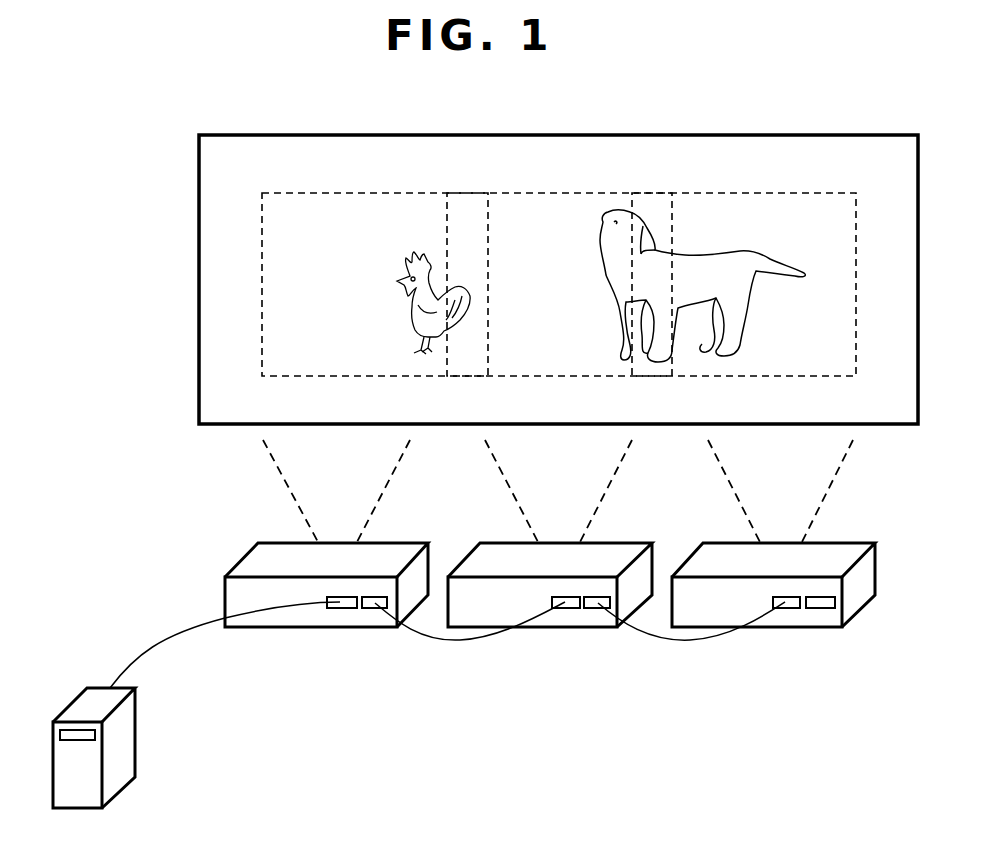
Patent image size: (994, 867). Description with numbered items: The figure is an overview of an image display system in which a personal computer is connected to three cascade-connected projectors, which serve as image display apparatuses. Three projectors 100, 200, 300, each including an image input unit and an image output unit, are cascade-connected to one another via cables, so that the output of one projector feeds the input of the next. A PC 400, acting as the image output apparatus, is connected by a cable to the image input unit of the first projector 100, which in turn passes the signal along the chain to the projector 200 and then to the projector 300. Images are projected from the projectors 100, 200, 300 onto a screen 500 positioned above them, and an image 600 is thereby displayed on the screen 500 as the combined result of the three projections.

The projector 100 is at (368, 630).
The projector 200 is at (595, 630).
The projector 300 is at (810, 630).
The PC 400 is at (97, 688).
The screen 500 is at (881, 135).
The image 600 is at (806, 193).